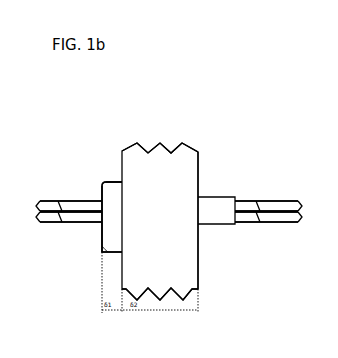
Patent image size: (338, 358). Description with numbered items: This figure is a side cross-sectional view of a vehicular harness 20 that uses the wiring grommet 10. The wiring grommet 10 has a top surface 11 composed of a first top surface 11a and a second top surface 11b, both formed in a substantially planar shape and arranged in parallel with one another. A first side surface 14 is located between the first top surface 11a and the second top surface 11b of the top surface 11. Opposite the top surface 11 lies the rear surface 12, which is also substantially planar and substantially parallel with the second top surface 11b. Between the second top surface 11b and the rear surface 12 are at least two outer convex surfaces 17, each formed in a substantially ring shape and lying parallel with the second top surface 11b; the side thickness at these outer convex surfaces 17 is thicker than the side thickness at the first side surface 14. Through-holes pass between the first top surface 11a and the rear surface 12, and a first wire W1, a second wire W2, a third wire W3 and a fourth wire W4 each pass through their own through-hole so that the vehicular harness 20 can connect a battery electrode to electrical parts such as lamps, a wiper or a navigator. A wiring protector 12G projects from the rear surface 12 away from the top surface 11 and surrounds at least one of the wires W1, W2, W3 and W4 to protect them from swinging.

The wiring grommet 10 is at (173, 127).
The top surface 11 is at (93, 123).
The first top surface 11a is at (101, 184).
The second top surface 11b is at (121, 160).
The rear surface 12 is at (137, 143).
The wiring protector 12G is at (222, 230).
The first side surface 14 is at (110, 262).
The outer convex surface 17 is at (158, 300).
The vehicular harness 20 is at (230, 155).
The first wire W1 is at (290, 201).
The second wire W2 is at (250, 201).
The third wire W3 is at (300, 224).
The fourth wire W4 is at (244, 224).